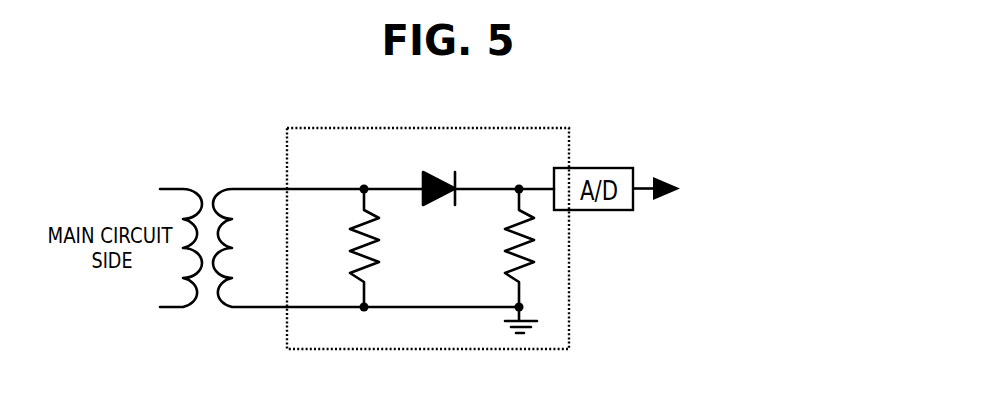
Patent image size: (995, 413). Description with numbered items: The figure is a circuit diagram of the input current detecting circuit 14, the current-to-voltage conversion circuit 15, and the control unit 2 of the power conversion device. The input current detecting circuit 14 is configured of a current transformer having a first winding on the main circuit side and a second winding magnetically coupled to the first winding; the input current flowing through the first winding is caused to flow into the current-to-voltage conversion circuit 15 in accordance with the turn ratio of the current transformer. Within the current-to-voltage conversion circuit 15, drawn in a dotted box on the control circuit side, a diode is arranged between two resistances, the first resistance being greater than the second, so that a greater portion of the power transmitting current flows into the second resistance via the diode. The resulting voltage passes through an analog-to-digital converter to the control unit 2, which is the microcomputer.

The input current detecting circuit 14 is at (182, 172).
The current-to-voltage conversion circuit 15 is at (402, 128).
The control unit 2 is at (745, 168).